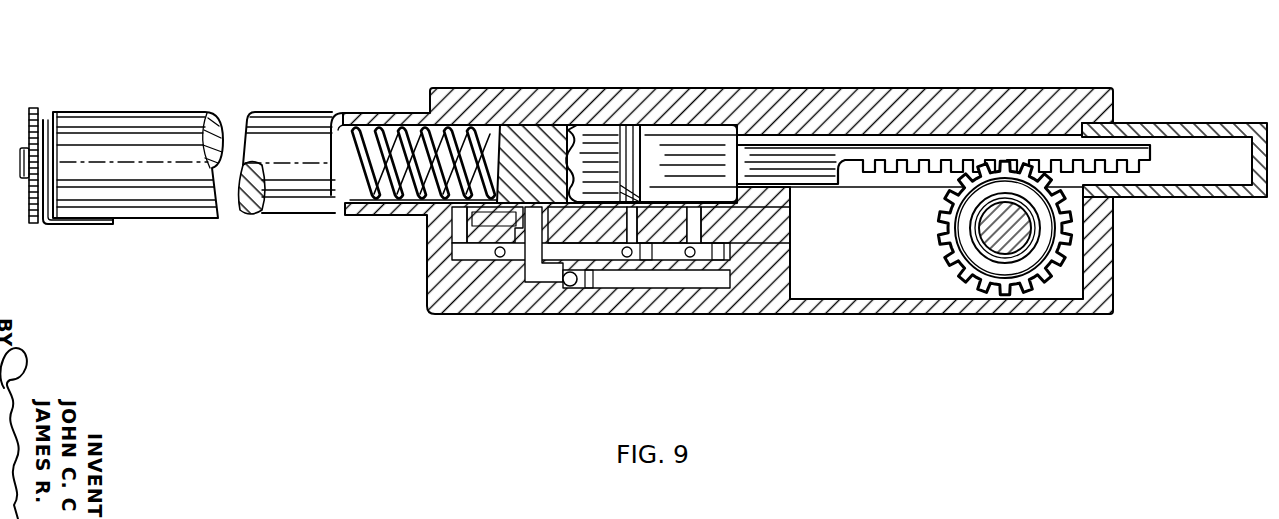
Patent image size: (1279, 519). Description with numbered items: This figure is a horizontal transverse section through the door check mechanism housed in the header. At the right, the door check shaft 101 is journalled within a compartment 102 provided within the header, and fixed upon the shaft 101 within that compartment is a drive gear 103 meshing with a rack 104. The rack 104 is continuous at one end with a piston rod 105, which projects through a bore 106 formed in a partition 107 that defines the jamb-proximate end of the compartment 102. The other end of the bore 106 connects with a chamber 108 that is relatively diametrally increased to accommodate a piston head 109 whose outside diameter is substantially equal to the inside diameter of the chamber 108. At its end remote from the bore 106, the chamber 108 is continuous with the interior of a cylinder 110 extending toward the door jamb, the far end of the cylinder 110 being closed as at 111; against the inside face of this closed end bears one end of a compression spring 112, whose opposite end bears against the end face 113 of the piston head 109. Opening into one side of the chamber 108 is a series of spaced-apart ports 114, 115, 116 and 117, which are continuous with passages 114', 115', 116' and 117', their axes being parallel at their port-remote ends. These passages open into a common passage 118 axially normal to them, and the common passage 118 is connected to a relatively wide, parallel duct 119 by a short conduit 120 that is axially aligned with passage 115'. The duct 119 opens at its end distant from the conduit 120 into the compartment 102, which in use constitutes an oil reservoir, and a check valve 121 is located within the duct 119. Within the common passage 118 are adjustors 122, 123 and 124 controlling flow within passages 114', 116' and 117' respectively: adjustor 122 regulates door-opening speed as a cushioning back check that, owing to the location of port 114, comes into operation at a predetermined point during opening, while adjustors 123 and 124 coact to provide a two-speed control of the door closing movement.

The door check shaft 101 is at (1077, 240).
The compartment 102 is at (729, 276).
The drive gear 103 is at (1054, 241).
The rack 104 is at (1174, 187).
The piston rod 105 is at (705, 119).
The bore 106 is at (722, 116).
The partition 107 is at (936, 276).
The chamber 108 is at (914, 96).
The piston head 109 is at (602, 117).
The cylinder 110 is at (287, 127).
The closed end 111 is at (121, 139).
The compression spring 112 is at (416, 120).
The end face 113 is at (523, 122).
The port 114 is at (442, 239).
The passage 114' is at (438, 251).
The port 115 is at (503, 302).
The passage 115' is at (556, 293).
The port 116 is at (677, 280).
The passage 116' is at (685, 289).
The port 117 is at (751, 280).
The passage 117' is at (755, 289).
The common passage 118 is at (442, 281).
The duct 119 is at (646, 340).
The conduit 120 is at (537, 339).
The check valve 121 is at (549, 352).
The adjustor 122 is at (570, 312).
The adjustor 123 is at (676, 316).
The adjustor 124 is at (746, 316).